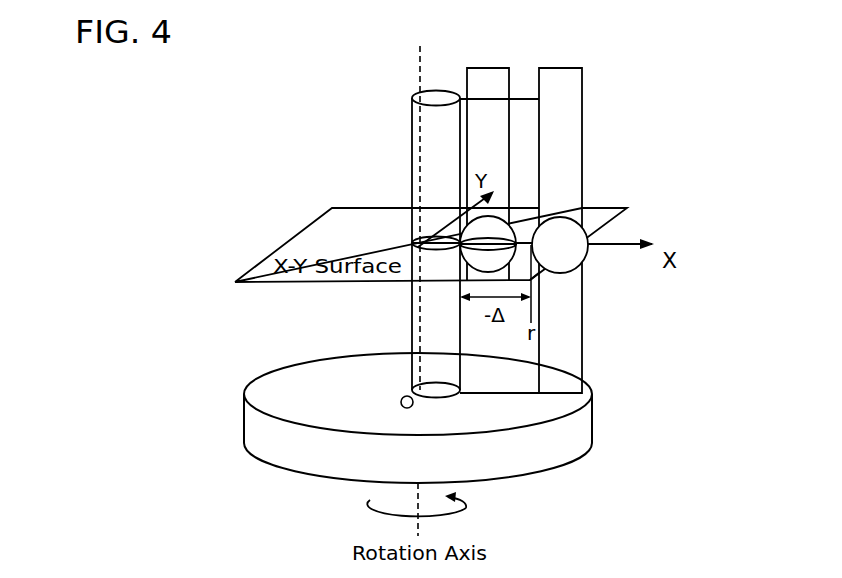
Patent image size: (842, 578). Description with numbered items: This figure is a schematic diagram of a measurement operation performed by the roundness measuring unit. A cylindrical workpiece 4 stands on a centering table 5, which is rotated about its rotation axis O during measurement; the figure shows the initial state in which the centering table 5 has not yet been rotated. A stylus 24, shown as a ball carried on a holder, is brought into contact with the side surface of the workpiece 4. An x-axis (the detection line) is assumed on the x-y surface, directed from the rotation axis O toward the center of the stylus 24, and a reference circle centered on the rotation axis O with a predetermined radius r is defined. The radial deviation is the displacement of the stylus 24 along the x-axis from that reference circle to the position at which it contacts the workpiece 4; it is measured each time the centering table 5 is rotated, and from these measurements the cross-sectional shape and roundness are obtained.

The workpiece 4 is at (411, 111).
The stylus 24 is at (512, 232).
The centering table 5 is at (595, 408).